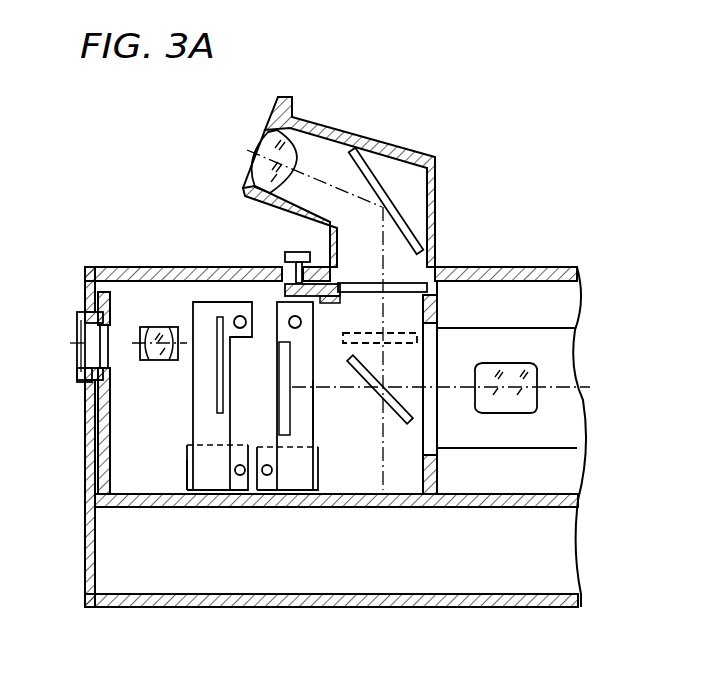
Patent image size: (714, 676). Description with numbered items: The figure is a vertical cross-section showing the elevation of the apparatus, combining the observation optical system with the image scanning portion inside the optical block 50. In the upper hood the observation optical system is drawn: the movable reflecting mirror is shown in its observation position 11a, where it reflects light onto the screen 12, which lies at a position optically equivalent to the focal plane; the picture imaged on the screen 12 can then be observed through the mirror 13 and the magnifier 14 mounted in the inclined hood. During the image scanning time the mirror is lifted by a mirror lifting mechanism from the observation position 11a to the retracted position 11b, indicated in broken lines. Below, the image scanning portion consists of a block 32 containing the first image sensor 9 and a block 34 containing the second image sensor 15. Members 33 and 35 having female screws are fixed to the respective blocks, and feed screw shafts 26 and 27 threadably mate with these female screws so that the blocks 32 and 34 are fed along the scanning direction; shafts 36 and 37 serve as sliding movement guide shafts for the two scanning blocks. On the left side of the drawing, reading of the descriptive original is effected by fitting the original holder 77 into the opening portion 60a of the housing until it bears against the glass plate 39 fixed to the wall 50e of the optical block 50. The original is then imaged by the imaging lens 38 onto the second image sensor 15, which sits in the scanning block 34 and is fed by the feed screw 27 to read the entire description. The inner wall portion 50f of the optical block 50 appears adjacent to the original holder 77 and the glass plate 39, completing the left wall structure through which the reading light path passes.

The optical block 50 is at (490, 506).
The housing inner wall 50f is at (108, 330).
The wall of the optical block 50e is at (107, 447).
The original holder 77 is at (85, 347).
The opening portion 60a is at (85, 371).
The glass plate 39 is at (107, 362).
The imaging lens 38 is at (163, 327).
The second image sensor 15 is at (213, 323).
The sliding movement guide shaft 37 is at (240, 316).
The first image sensor 9 is at (277, 313).
The sliding movement guide shaft 36 is at (292, 316).
The block 34 is at (195, 432).
The member having a female screw 35 is at (187, 472).
The feed screw shaft 27 is at (240, 476).
The feed screw shaft 26 is at (268, 476).
The member having a female screw 33 is at (318, 467).
The block 32 is at (313, 415).
The screen 12 is at (405, 285).
The retracted position of the mirror 11b is at (405, 333).
The observation position of the mirror 11a is at (398, 422).
The mirror 13 is at (367, 168).
The magnifier 14 is at (273, 142).